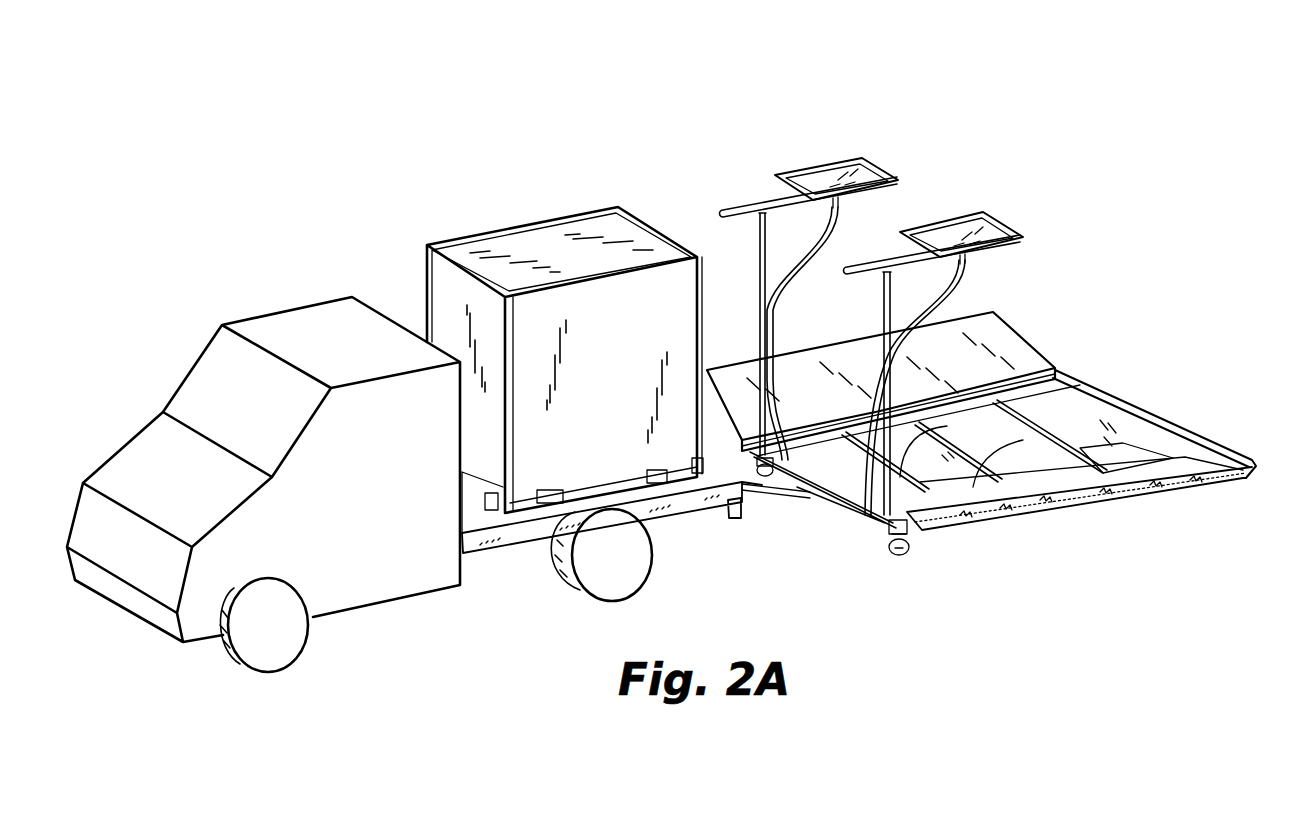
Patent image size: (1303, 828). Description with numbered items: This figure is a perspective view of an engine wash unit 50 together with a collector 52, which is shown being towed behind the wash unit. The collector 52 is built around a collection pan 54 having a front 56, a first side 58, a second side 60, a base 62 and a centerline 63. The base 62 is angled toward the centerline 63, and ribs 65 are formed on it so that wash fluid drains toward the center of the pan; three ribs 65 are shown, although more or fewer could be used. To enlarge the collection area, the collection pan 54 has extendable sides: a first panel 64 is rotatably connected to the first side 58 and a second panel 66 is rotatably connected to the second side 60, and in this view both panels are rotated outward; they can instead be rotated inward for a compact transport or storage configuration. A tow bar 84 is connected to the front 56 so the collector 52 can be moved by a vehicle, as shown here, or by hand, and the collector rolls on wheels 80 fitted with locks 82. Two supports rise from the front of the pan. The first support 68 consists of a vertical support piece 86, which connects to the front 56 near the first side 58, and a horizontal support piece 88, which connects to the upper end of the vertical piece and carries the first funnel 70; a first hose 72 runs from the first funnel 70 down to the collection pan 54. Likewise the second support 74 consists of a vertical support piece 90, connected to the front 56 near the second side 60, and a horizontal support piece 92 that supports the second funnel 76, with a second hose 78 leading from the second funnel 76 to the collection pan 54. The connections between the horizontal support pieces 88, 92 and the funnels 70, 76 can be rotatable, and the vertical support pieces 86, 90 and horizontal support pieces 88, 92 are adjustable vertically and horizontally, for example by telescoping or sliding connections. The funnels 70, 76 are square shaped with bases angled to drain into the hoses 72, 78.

The engine wash unit 50 is at (517, 160).
The collector 52 is at (965, 332).
The collection pan 54 is at (1049, 437).
The front 56 is at (847, 537).
The first side 58 is at (890, 571).
The second side 60 is at (1053, 368).
The base 62 is at (975, 490).
The centerline 63 is at (1112, 422).
The first panel 64 is at (1110, 505).
The ribs 65 is at (1020, 442).
The second panel 66 is at (988, 312).
The first support 68 is at (925, 487).
The first funnel 70 is at (991, 190).
The first hose 72 is at (956, 294).
The second support 74 is at (779, 251).
The second funnel 76 is at (849, 130).
The second hose 78 is at (827, 229).
The wheels 80 is at (888, 550).
The locks 82 is at (903, 552).
The tow bar 84 is at (767, 493).
The vertical support piece 86 is at (884, 313).
The horizontal support piece 88 is at (867, 265).
The vertical support piece 90 is at (760, 293).
The horizontal support piece 92 is at (743, 207).